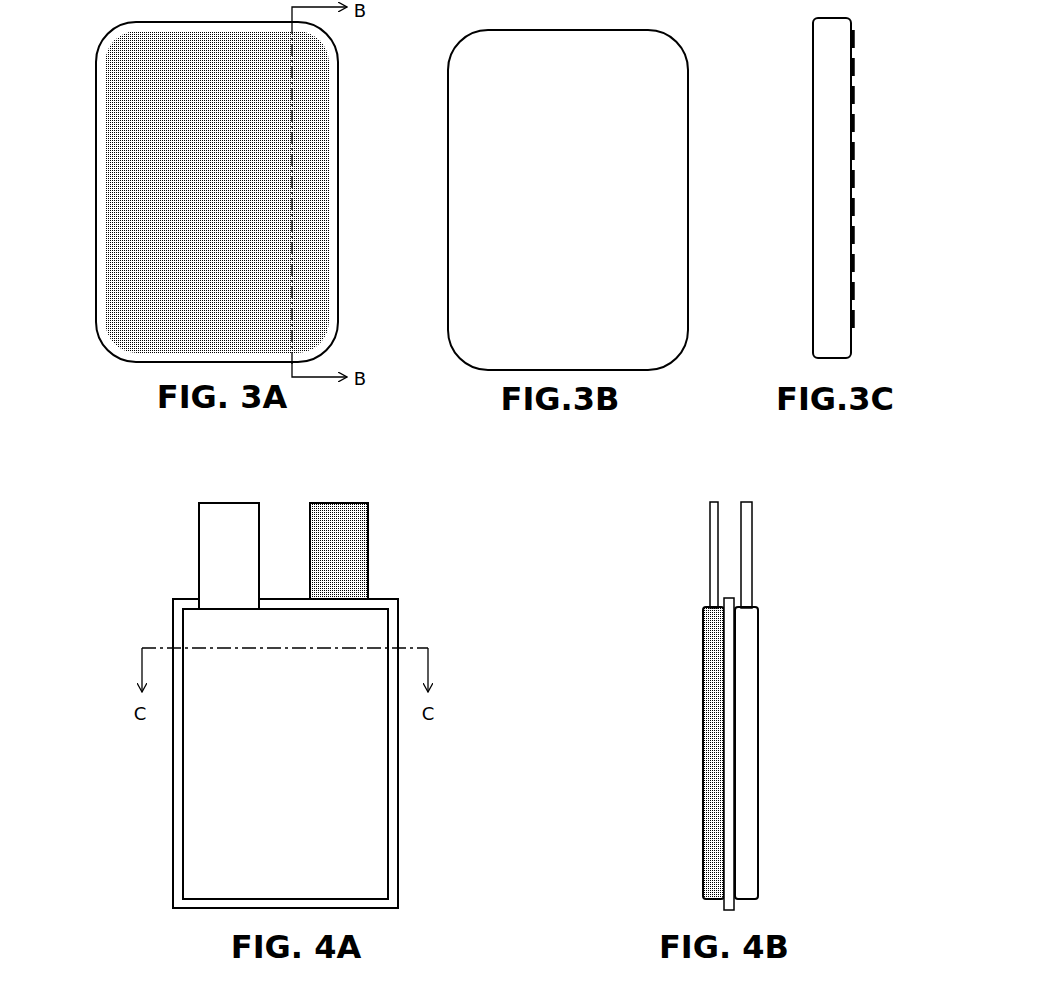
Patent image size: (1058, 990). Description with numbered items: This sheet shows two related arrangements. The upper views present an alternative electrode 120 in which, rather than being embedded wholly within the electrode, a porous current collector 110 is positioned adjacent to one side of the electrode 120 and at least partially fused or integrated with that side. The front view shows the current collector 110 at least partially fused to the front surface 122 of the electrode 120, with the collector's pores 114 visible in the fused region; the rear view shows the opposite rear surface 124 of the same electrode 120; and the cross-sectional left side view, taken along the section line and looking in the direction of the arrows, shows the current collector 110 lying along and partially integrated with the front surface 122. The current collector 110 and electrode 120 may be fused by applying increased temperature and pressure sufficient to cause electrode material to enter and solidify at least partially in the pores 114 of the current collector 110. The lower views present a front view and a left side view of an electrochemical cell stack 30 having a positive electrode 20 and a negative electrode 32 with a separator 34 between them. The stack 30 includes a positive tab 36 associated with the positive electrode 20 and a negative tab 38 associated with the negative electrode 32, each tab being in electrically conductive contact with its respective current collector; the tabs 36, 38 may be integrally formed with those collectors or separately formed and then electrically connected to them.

In FIG. 3A, the current collector 110 is at (109, 53).
In FIG. 3C, the current collector 110 is at (853, 95).
In FIG. 3A, the pores 114 is at (302, 303).
In FIG. 3A, the electrode 120 is at (83, 132).
In FIG. 3B, the electrode 120 is at (437, 128).
In FIG. 3C, the electrode 120 is at (797, 108).
In FIG. 3A, the front surface 122 is at (100, 262).
In FIG. 3C, the front surface 122 is at (853, 24).
In FIG. 3B, the rear surface 124 is at (460, 284).
In FIG. 3C, the rear surface 124 is at (813, 222).
In FIG. 4A, the positive electrode 20 is at (388, 772).
In FIG. 4B, the positive electrode 20 is at (758, 778).
In FIG. 4A, the electrochemical cell stack 30 is at (118, 783).
In FIG. 4B, the electrochemical cell stack 30 is at (678, 740).
In FIG. 4B, the negative electrode 32 is at (703, 682).
In FIG. 4A, the separator 34 is at (173, 633).
In FIG. 4B, the separator 34 is at (737, 905).
In FIG. 4A, the positive tab 36 is at (199, 552).
In FIG. 4B, the positive tab 36 is at (752, 532).
In FIG. 4A, the negative tab 38 is at (368, 535).
In FIG. 4B, the negative tab 38 is at (710, 550).